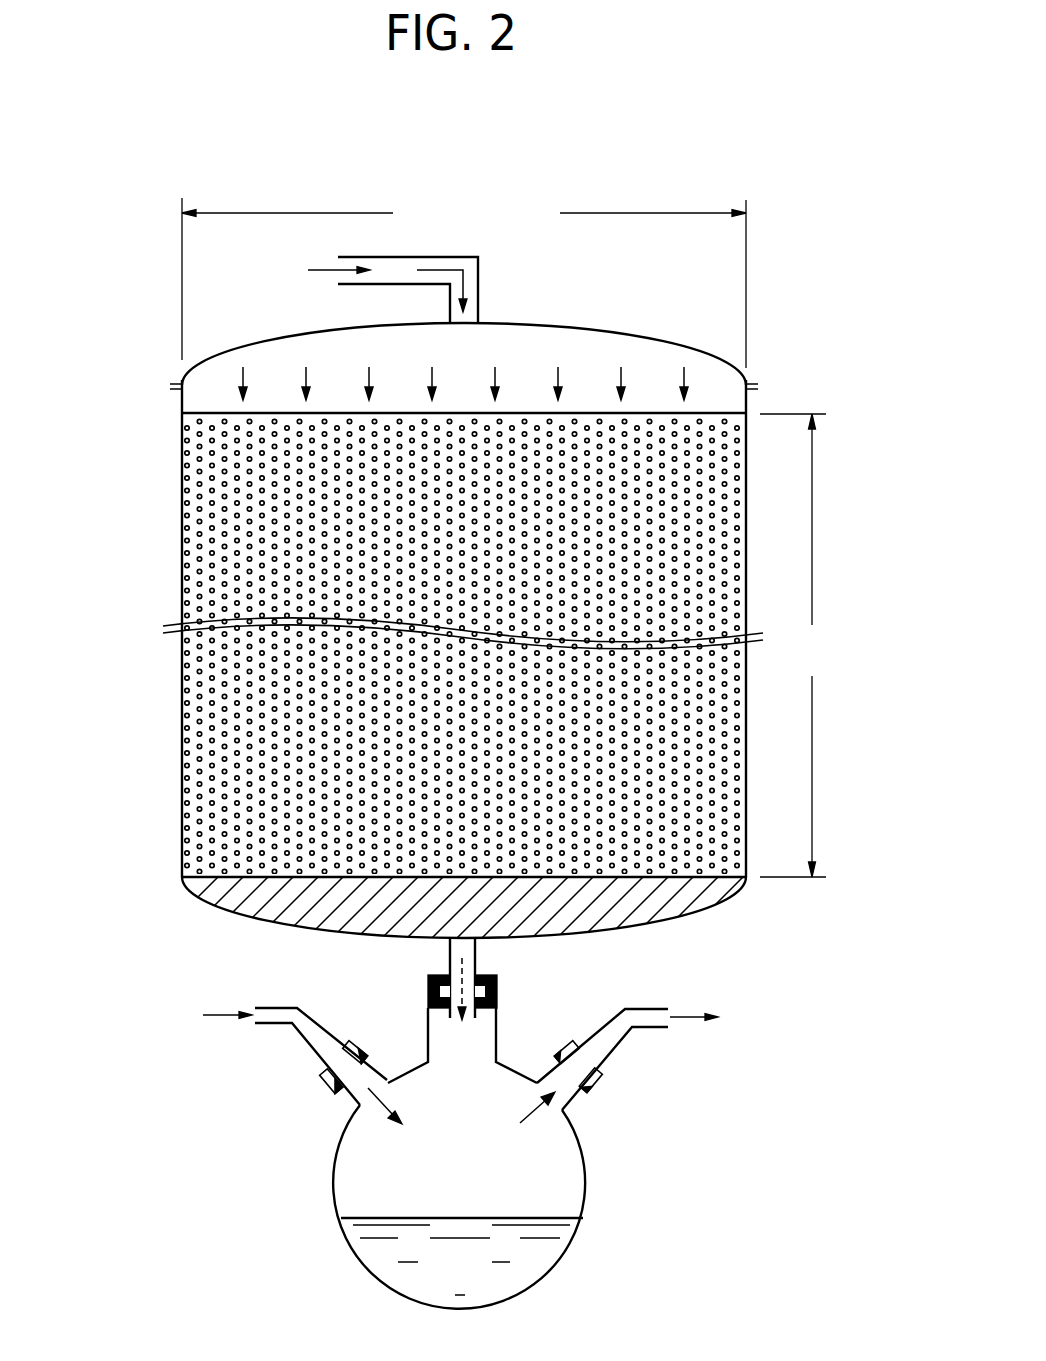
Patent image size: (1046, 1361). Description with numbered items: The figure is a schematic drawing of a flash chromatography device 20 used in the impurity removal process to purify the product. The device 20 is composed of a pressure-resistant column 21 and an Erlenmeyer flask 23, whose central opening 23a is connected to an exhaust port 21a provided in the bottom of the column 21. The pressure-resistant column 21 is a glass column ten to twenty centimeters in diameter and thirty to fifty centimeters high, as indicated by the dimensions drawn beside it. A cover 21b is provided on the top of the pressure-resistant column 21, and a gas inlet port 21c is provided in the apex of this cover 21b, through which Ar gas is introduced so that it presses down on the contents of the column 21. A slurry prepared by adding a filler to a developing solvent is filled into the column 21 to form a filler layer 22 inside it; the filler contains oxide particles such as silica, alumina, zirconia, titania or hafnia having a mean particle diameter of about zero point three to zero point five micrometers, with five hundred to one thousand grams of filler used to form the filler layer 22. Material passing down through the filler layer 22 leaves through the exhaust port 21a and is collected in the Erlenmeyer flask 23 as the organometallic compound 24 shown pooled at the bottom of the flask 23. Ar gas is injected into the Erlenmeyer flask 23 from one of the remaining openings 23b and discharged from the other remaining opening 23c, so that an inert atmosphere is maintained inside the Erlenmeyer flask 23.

The flash chromatography device 20 is at (68, 176).
The pressure-resistant column 21 is at (176, 447).
The exhaust port 21a is at (448, 960).
The cover 21b is at (746, 372).
The gas inlet port 21c is at (480, 263).
The filler layer 22 is at (200, 585).
The Erlenmeyer flask 23 is at (335, 1175).
The central opening 23a is at (428, 988).
The opening 23b is at (328, 1077).
The opening 23c is at (597, 1070).
The organometallic compound 24 is at (525, 1273).